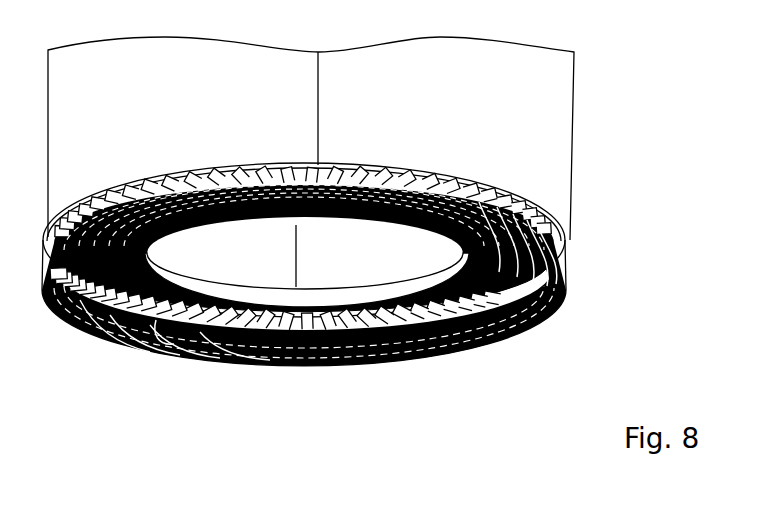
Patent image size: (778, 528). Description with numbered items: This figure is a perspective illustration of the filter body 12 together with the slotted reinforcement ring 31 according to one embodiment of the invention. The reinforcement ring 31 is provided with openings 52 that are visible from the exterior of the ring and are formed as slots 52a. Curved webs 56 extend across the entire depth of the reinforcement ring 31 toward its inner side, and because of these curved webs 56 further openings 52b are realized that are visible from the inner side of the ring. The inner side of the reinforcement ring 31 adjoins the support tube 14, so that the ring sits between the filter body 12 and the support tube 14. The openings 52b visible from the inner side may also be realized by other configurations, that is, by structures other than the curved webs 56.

The filter body 12 is at (558, 127).
The reinforcement ring 31 is at (562, 243).
The openings 52 is at (456, 188).
The slots 52a is at (518, 244).
The openings 52b is at (230, 350).
The curved webs 56 is at (166, 342).
The support tube 14 is at (347, 267).